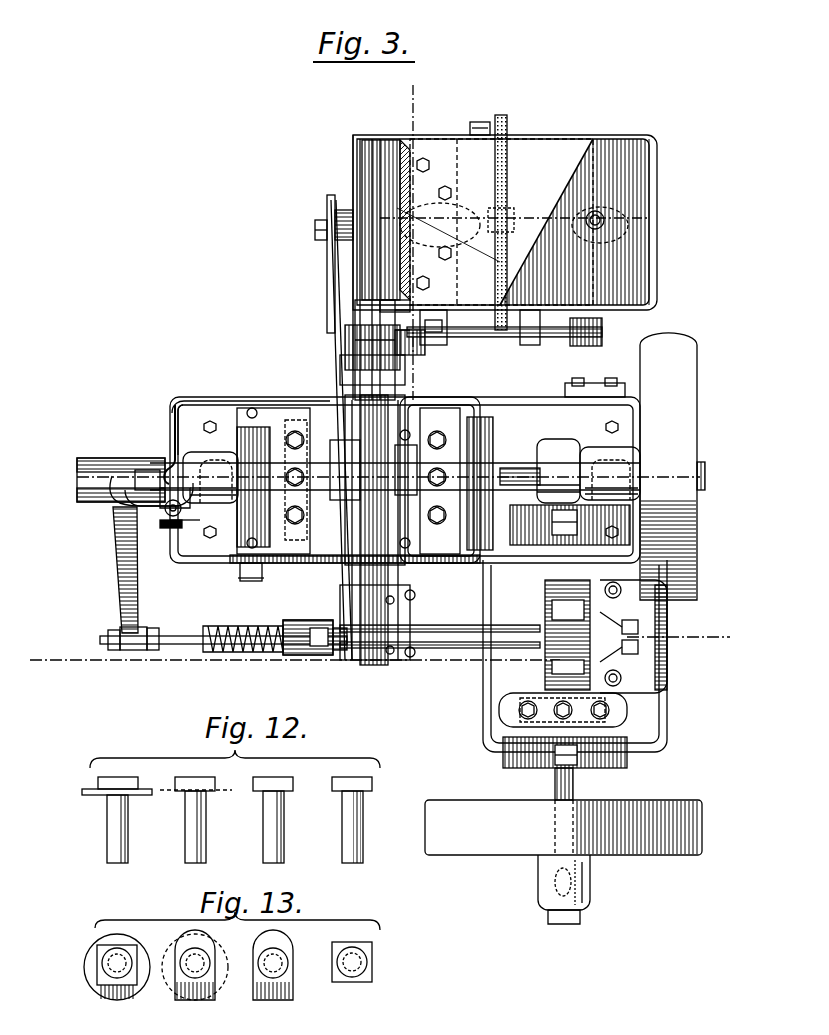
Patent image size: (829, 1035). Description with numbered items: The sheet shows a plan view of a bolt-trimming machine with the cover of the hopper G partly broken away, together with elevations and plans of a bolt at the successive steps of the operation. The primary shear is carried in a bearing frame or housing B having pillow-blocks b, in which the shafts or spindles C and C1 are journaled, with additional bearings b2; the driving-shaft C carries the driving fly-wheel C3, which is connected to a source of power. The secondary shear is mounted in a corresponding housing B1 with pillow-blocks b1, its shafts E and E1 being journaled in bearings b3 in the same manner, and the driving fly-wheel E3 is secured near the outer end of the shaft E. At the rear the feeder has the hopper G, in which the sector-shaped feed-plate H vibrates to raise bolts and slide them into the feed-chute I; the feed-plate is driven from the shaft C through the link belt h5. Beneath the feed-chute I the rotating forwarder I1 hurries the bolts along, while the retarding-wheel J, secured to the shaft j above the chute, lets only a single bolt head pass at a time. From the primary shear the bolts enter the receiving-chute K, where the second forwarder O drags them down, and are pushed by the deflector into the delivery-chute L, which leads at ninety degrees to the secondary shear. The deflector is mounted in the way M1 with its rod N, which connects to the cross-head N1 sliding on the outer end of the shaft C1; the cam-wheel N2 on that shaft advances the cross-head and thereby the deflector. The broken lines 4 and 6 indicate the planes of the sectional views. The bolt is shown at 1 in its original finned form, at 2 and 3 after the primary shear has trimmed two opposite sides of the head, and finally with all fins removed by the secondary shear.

In FIG. 3, the broken line 6 6 is at (416, 93).
In FIG. 3, the hopper G is at (515, 222).
In FIG. 3, the feed-chute I is at (363, 168).
In FIG. 3, the rotating forwarder I1 is at (330, 220).
In FIG. 3, the retarding-wheel J is at (355, 322).
In FIG. 3, the feed-plate H is at (420, 265).
In FIG. 3, the link belt h5 is at (500, 330).
In FIG. 3, the shaft j is at (597, 330).
In FIG. 3, the driving fly-wheel C3 is at (686, 348).
In FIG. 3, the bearing frame or housing B is at (185, 560).
In FIG. 3, the cam-wheel N2 is at (174, 413).
In FIG. 3, the shaft or spindle C is at (522, 468).
In FIG. 3, the pillow-block b is at (295, 432).
In FIG. 3, the bearing b3 is at (210, 452).
In FIG. 3, the bearing b2 is at (600, 450).
In FIG. 3, the shaft or spindle E1 is at (577, 398).
In FIG. 3, the receiving-chute K is at (400, 560).
In FIG. 3, the shaft or spindle C1 is at (140, 470).
In FIG. 3, the cross-head N1 is at (110, 508).
In FIG. 3, the rod N is at (170, 633).
In FIG. 3, the way M1 is at (275, 626).
In FIG. 3, the second forwarder O is at (340, 625).
In FIG. 3, the delivery-chute L is at (430, 625).
In FIG. 3, the broken line 4 4 is at (63, 685).
In FIG. 12, the broken line 4 4 is at (352, 812).
In FIG. 13, the broken line 4 4 is at (352, 982).
In FIG. 3, the bearing frame or housing B1 is at (630, 722).
In FIG. 3, the pillow-block b1 is at (640, 700).
In FIG. 3, the shaft or spindle E is at (575, 785).
In FIG. 3, the driving fly-wheel E3 is at (455, 805).
In FIG. 12, the bolt before trimming 1 is at (117, 812).
In FIG. 13, the bolt before trimming 1 is at (117, 978).
In FIG. 12, the bolt after primary shear 2 is at (196, 812).
In FIG. 13, the bolt after primary shear 2 is at (195, 976).
In FIG. 12, the bolt after primary shear 3 is at (273, 812).
In FIG. 13, the bolt after primary shear 3 is at (273, 976).